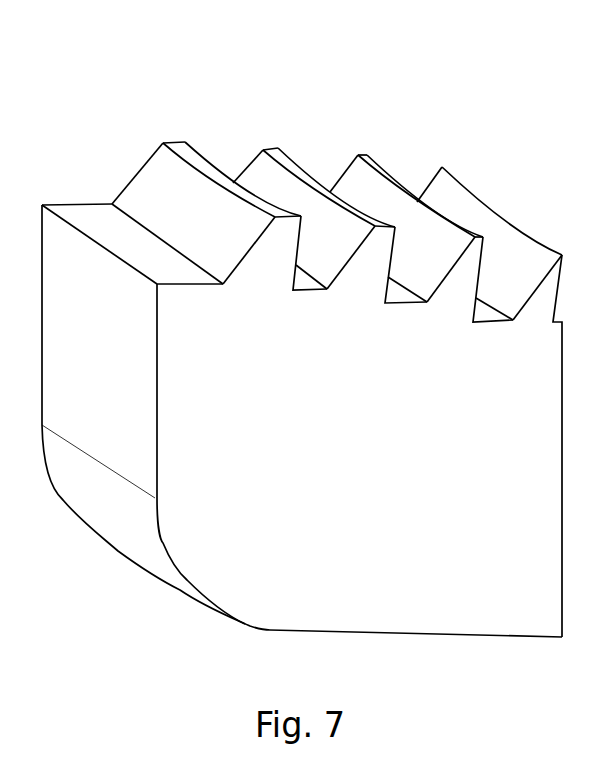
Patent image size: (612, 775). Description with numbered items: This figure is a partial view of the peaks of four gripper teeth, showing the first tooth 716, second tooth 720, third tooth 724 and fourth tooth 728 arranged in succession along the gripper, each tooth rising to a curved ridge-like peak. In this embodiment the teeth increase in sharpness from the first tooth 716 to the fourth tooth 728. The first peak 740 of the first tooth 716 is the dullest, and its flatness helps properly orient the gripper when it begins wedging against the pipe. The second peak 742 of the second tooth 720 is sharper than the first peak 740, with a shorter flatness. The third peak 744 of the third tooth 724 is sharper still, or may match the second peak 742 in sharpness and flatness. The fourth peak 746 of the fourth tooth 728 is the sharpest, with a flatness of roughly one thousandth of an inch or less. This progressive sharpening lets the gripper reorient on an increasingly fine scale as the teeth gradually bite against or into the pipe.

The first tooth 716 is at (219, 166).
The second tooth 720 is at (330, 182).
The third tooth 724 is at (421, 193).
The fourth tooth 728 is at (489, 368).
The first peak 740 is at (202, 155).
The second peak 742 is at (297, 166).
The third peak 744 is at (377, 168).
The fourth peak 746 is at (468, 186).